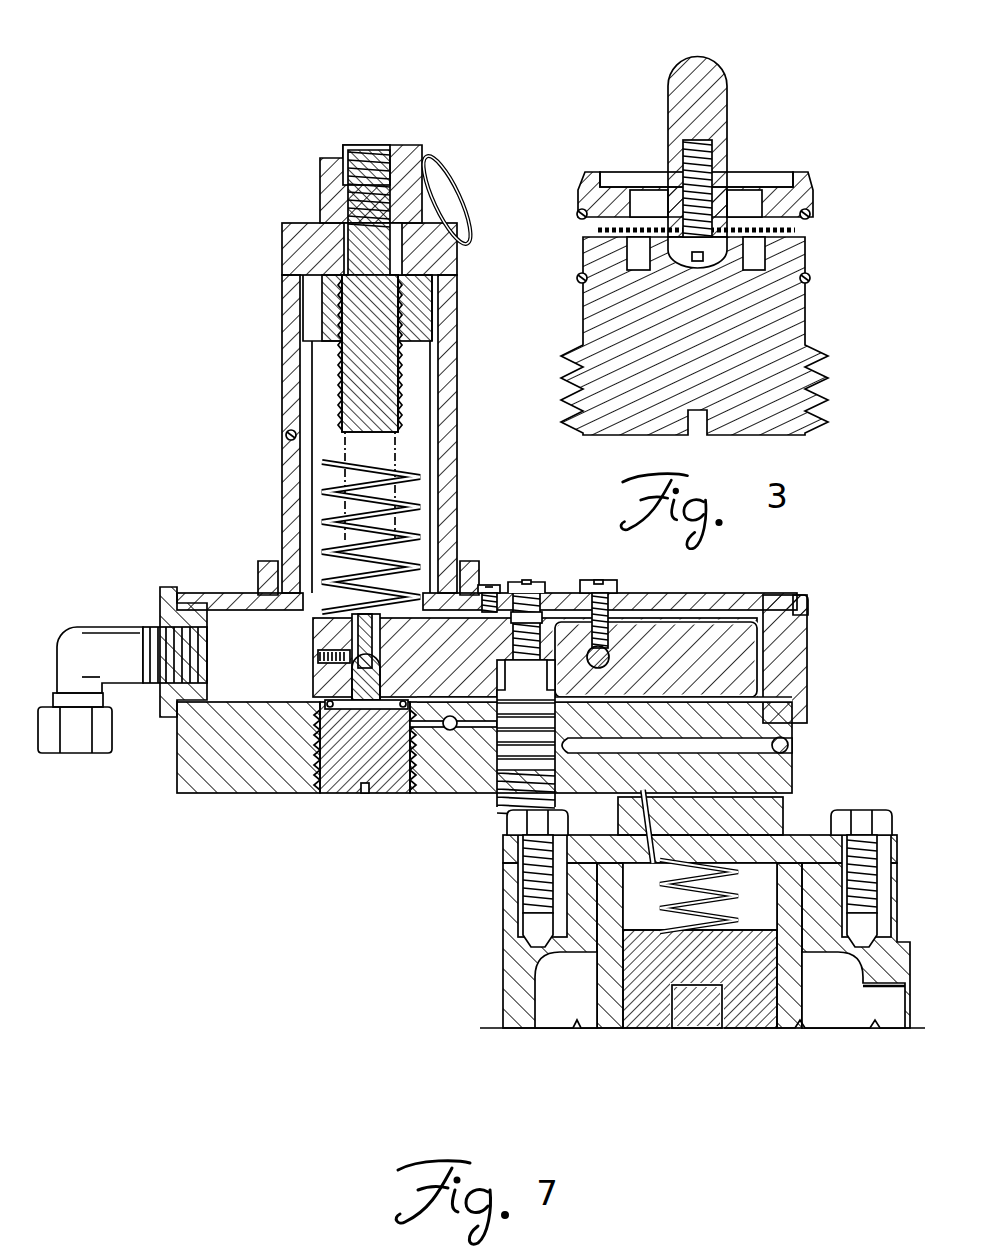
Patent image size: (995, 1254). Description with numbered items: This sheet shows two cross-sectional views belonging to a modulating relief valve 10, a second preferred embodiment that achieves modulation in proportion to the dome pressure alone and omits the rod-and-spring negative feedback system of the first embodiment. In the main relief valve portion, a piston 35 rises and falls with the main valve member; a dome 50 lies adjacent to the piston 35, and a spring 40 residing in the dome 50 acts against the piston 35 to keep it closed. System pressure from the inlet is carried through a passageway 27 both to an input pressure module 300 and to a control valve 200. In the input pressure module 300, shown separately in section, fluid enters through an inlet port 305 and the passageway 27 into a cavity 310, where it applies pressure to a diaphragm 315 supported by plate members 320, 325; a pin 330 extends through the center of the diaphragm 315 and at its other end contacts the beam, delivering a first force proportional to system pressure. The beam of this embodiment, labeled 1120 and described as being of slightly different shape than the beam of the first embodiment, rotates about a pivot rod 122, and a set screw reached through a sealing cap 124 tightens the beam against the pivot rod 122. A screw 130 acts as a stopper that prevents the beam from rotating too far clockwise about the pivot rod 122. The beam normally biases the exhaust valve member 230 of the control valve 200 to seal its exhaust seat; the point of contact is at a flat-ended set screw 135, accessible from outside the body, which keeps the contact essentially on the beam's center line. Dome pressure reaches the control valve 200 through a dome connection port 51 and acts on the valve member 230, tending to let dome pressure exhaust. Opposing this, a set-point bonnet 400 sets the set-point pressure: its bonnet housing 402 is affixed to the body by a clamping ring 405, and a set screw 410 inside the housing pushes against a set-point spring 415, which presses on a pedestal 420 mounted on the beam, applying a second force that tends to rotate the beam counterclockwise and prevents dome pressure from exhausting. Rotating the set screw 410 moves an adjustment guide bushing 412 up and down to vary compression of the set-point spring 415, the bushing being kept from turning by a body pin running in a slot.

In FIG. 7, the modulating relief valve 10 is at (481, 605).
In FIG. 7, the passageway 27 is at (432, 796).
In FIG. 7, the piston 35 is at (635, 1022).
In FIG. 7, the spring 40 is at (655, 925).
In FIG. 7, the dome 50 is at (753, 903).
In FIG. 7, the dome connection port 51 is at (757, 743).
In FIG. 7, the pivot rod 122 is at (612, 640).
In FIG. 7, the sealing cap 124 is at (597, 582).
In FIG. 7, the screw 130 is at (490, 585).
In FIG. 7, the set screw 135 is at (548, 605).
In FIG. 7, the control valve 200 is at (488, 806).
In FIG. 7, the exhaust valve member 230 is at (543, 615).
In FIG. 3, the input pressure module 300 is at (709, 258).
In FIG. 7, the input pressure module 300 is at (335, 802).
In FIG. 7, the inlet port 305 is at (455, 800).
In FIG. 3, the cavity 310 is at (752, 257).
In FIG. 3, the diaphragm 315 is at (757, 230).
In FIG. 3, the plate member 320 is at (800, 229).
In FIG. 3, the plate member 325 is at (652, 233).
In FIG. 3, the pin 330 is at (680, 75).
In FIG. 7, the set-point bonnet 400 is at (348, 381).
In FIG. 7, the bonnet housing 402 is at (292, 311).
In FIG. 7, the clamping ring 405 is at (265, 562).
In FIG. 7, the set screw 410 is at (345, 275).
In FIG. 7, the adjustment guide bushing 412 is at (328, 296).
In FIG. 7, the set-point spring 415 is at (430, 470).
In FIG. 7, the pedestal 420 is at (303, 618).
In FIG. 7, the manifold block 1120 is at (717, 627).